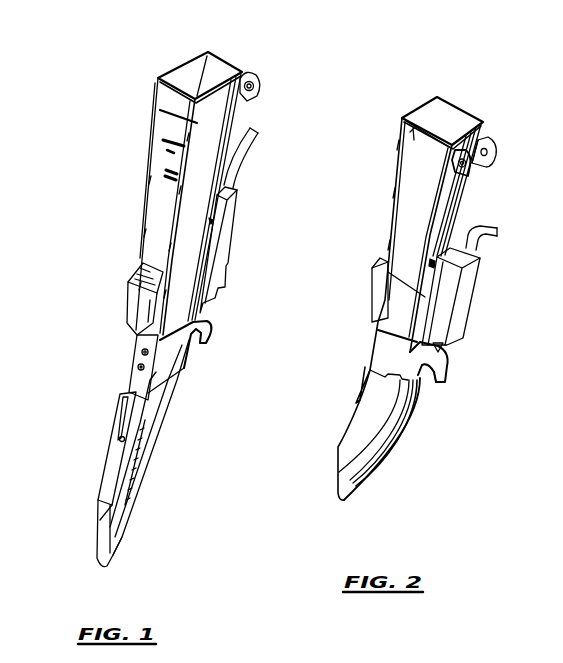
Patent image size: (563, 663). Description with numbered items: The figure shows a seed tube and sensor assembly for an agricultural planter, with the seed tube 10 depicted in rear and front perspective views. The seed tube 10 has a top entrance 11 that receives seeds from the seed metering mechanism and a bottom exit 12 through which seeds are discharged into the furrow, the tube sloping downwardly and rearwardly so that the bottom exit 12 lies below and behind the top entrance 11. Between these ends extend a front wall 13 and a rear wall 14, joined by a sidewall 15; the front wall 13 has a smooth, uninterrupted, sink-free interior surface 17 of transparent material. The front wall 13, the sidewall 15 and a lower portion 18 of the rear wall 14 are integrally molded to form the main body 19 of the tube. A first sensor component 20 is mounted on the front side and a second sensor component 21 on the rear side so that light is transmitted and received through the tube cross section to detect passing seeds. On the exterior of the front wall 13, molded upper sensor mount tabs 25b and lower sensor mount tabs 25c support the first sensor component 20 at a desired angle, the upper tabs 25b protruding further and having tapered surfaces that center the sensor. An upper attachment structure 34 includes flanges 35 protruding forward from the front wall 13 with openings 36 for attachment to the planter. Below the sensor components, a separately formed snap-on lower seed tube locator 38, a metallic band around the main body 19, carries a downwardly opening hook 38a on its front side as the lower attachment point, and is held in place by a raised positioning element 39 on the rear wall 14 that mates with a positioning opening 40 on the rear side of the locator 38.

In FIG. 1, the seed tube 10 is at (250, 67).
In FIG. 2, the seed tube 10 is at (485, 105).
In FIG. 1, the top entrance 11 is at (170, 72).
In FIG. 2, the top entrance 11 is at (447, 128).
In FIG. 1, the bottom exit 12 is at (104, 536).
In FIG. 2, the bottom exit 12 is at (338, 468).
In FIG. 1, the front wall 13 is at (174, 397).
In FIG. 2, the front wall 13 is at (462, 221).
In FIG. 1, the rear wall 14 is at (160, 208).
In FIG. 2, the rear wall 14 is at (389, 230).
In FIG. 1, the sidewall 15 is at (140, 468).
In FIG. 2, the sidewall 15 is at (418, 182).
In FIG. 1, the interior surface 17 is at (217, 70).
In FIG. 1, the lower portion of the rear wall 18 is at (112, 462).
In FIG. 1, the main body 19 is at (152, 430).
In FIG. 1, the first sensor component 20 is at (228, 246).
In FIG. 2, the first sensor component 20 is at (468, 297).
In FIG. 1, the second sensor component 21 is at (137, 305).
In FIG. 2, the second sensor component 21 is at (375, 291).
In FIG. 2, the upper sensor mount tabs 25b is at (430, 263).
In FIG. 2, the lower sensor mount tabs 25c is at (414, 341).
In FIG. 1, the upper attachment structure 34 is at (259, 88).
In FIG. 2, the upper attachment structure 34 is at (498, 153).
In FIG. 2, the flanges 35 is at (470, 168).
In FIG. 2, the openings 36 is at (497, 145).
In FIG. 1, the lower seed tube locator 38 is at (193, 333).
In FIG. 2, the lower seed tube locator 38 is at (421, 367).
In FIG. 1, the hook 38a is at (209, 335).
In FIG. 2, the hook 38a is at (449, 367).
In FIG. 1, the raised positioning element 39 is at (138, 367).
In FIG. 1, the positioning opening 40 is at (142, 352).